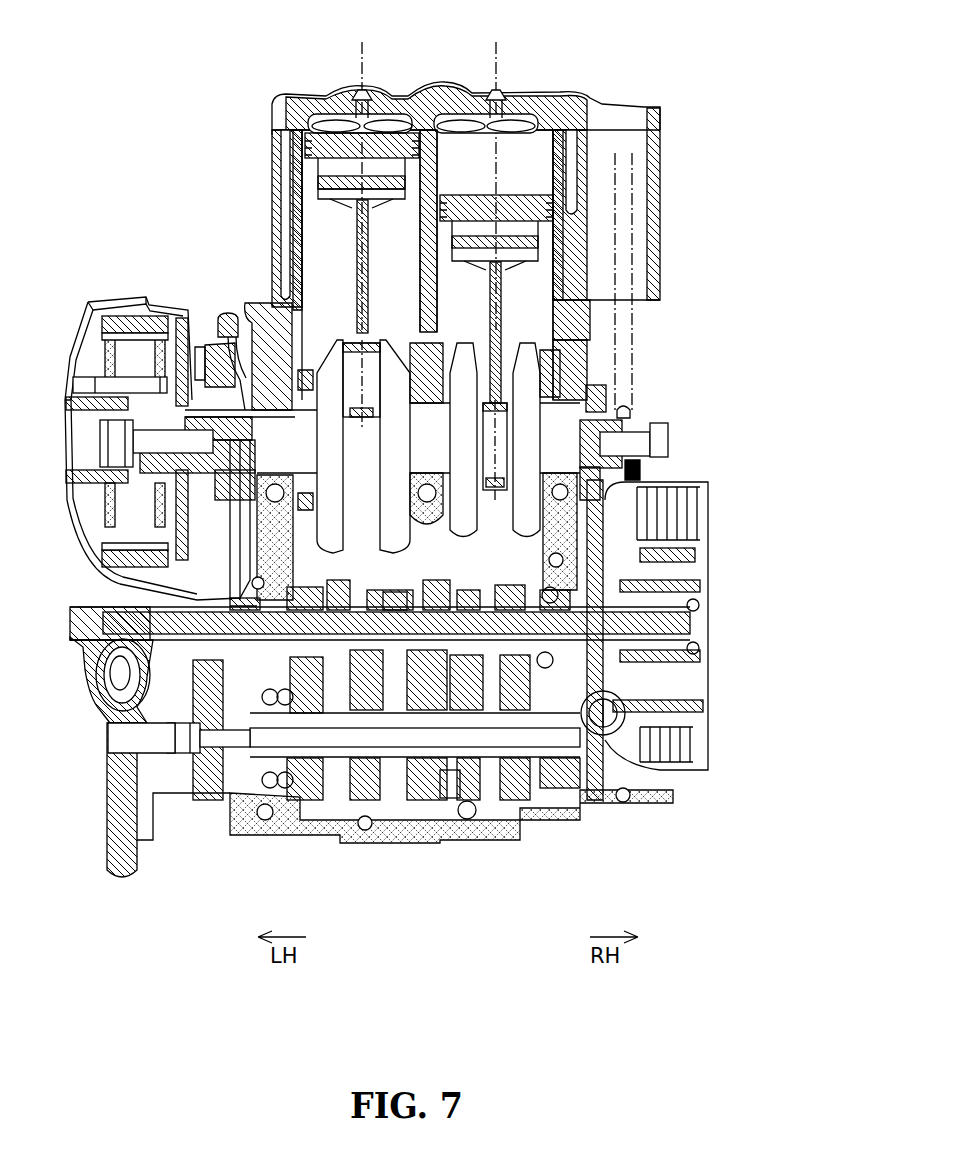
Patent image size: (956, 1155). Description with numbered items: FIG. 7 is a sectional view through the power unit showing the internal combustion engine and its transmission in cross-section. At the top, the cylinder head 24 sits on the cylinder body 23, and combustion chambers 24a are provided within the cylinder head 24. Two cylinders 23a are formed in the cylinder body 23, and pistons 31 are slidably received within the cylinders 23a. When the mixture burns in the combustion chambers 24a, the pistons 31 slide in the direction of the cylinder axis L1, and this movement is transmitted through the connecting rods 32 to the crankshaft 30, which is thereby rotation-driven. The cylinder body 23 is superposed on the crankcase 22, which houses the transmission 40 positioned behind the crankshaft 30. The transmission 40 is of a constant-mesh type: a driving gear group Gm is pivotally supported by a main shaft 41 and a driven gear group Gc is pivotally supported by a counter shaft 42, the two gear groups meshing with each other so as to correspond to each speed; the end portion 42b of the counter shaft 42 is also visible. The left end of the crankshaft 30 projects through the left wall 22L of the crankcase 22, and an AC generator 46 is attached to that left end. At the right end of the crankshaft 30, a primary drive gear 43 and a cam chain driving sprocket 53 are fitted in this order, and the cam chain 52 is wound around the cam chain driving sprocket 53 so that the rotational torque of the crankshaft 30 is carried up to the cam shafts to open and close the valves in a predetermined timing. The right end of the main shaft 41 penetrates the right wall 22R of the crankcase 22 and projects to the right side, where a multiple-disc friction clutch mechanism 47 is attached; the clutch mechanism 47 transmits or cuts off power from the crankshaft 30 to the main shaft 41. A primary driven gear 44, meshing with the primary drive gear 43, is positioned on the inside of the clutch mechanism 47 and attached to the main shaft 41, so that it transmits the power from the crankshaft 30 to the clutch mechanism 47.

The cylinder axis L1 is at (429, 173).
The combustion chambers 24a is at (458, 92).
The cylinder head 24 is at (274, 137).
The cylinder body 23 is at (290, 242).
The cylinders 23a is at (296, 292).
The pistons 31 is at (340, 205).
The connecting rods 32 is at (370, 256).
The crankshaft 30 is at (563, 444).
The AC generator 46 is at (90, 298).
The primary drive gear 43 is at (598, 384).
The cam chain 52 is at (633, 337).
The cam chain driving sprocket 53 is at (632, 405).
The left wall 22L is at (250, 572).
The right wall 22R is at (553, 535).
The crankcase 22 is at (412, 842).
The main shaft 41 is at (455, 590).
The driving gear group Gm is at (385, 580).
The transmission 40 is at (485, 800).
The counter shaft 42 is at (378, 795).
The driven gear group Gc is at (452, 800).
The counter shaft end portion 42b is at (562, 802).
The primary driven gear 44 is at (597, 790).
The multiple-disc friction clutch mechanism 47 is at (694, 784).